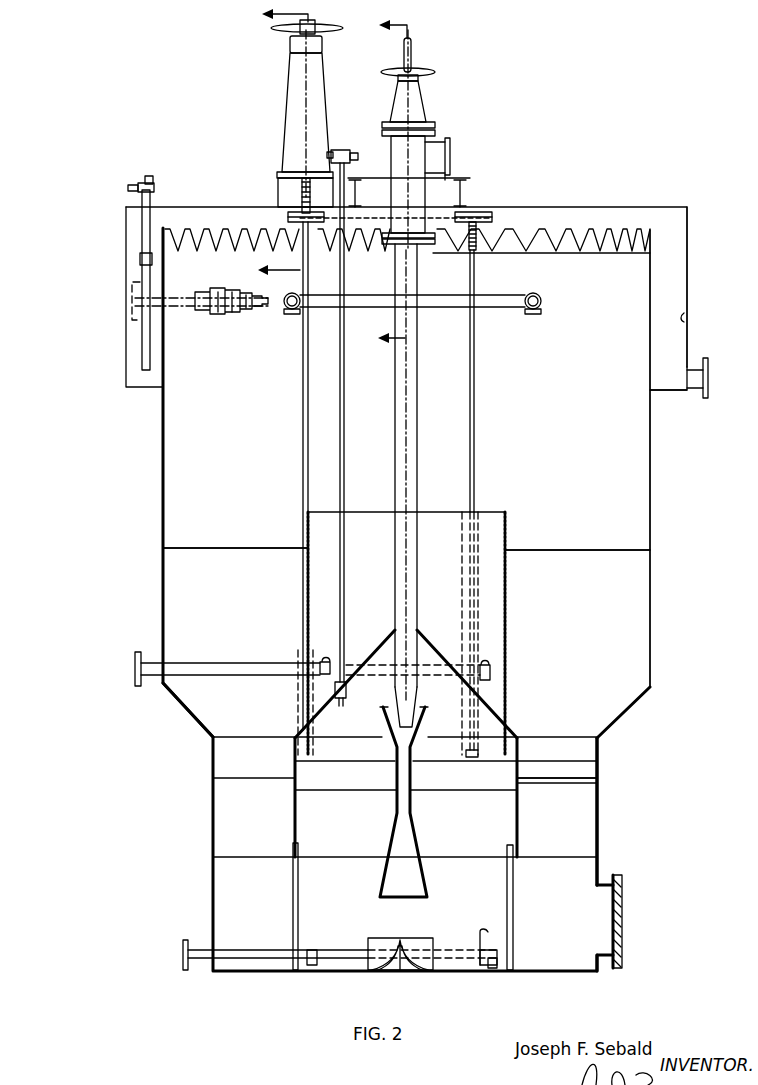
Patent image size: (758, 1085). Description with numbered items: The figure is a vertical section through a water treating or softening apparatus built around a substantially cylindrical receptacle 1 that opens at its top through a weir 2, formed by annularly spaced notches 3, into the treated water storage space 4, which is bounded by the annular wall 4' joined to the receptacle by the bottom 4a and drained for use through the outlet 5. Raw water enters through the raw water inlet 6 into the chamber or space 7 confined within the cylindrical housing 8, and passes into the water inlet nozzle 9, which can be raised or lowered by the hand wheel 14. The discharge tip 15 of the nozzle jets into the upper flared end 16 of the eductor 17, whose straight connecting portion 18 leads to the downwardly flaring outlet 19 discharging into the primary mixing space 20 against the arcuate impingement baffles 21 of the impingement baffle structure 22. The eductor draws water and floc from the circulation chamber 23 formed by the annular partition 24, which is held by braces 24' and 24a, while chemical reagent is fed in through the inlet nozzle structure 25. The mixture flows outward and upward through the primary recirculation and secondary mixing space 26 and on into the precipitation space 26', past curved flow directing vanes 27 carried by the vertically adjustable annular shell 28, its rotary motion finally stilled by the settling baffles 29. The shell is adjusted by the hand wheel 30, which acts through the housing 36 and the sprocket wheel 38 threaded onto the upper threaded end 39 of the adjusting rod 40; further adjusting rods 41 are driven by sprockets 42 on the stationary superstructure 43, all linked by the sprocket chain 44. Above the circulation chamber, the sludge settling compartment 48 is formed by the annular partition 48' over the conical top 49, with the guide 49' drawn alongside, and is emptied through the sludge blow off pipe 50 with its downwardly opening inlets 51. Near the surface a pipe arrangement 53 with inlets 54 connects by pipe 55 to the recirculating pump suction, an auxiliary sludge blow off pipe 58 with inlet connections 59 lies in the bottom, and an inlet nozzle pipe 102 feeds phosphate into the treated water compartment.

The receptacle 1 is at (653, 441).
The weir 2 is at (563, 238).
The notches 3 is at (243, 234).
The treated water storage space 4 is at (415, 458).
The annular wall 4' is at (700, 287).
The bottom 4a is at (680, 391).
The outlet 5 is at (703, 380).
The raw water inlet 6 is at (440, 158).
The chamber or space 7 is at (272, 143).
The cylindrical housing 8 is at (392, 158).
The water inlet nozzle 9 is at (412, 405).
The hand wheel 14 is at (432, 74).
The discharge tip 15 is at (413, 699).
The upper flared end 16 is at (390, 721).
The eductor 17 is at (410, 778).
The straight connecting portion 18 is at (397, 800).
The flaring outlet 19 is at (416, 829).
The primary mixing space 20 is at (482, 932).
The arcuate impingement baffles 21 is at (415, 968).
The impingement baffle structure 22 is at (378, 960).
The circulation chamber 23 is at (520, 812).
The annular partition 24 is at (437, 794).
The brace 24' is at (424, 780).
The brace 24a is at (294, 904).
The inlet nozzle structure 25 is at (346, 447).
The primary recirculation and secondary mixing space 26 is at (402, 906).
The precipitation space 26' is at (394, 680).
The flow directing vanes 27 is at (240, 808).
The annular shell 28 is at (600, 807).
The settling baffles 29 is at (190, 576).
The hand wheel 30 is at (277, 32).
The housing 36 is at (318, 96).
The sprocket wheel 38 is at (290, 218).
The upper threaded end 39 is at (310, 191).
The adjusting rod 40 is at (302, 418).
The adjusting rods 41 is at (474, 379).
The sprockets 42 is at (478, 213).
The stationary superstructure 43 is at (448, 170).
The sprocket chain 44 is at (372, 240).
The sludge settling compartment 48 is at (414, 633).
The annular partition 48' is at (501, 633).
The conical top 49 is at (434, 684).
The guide 49' is at (291, 689).
The sludge blow off pipe 50 is at (185, 668).
The downwardly opening inlets 51 is at (320, 680).
The pipe arrangement 53 is at (494, 310).
The inlets 54 is at (292, 317).
The pipe 55 is at (185, 300).
The auxiliary sludge blow off pipe 58 is at (268, 956).
The inlet connections 59 is at (310, 967).
The inlet nozzle pipe 102 is at (143, 348).